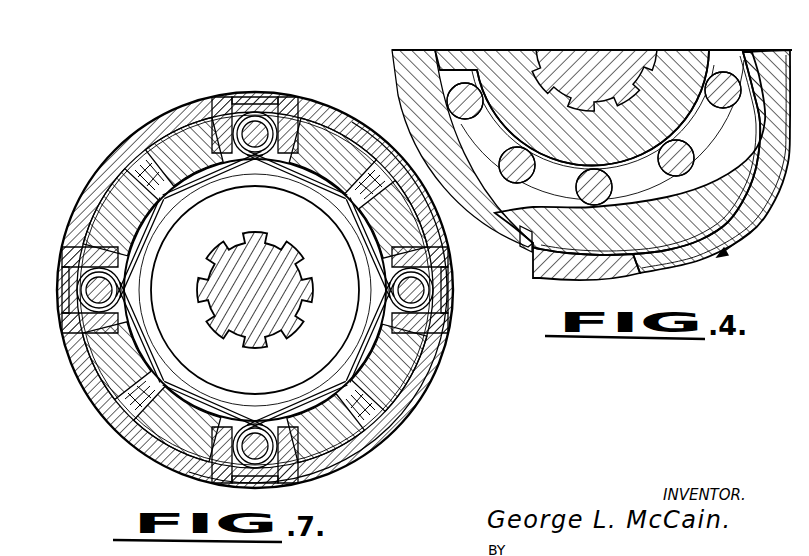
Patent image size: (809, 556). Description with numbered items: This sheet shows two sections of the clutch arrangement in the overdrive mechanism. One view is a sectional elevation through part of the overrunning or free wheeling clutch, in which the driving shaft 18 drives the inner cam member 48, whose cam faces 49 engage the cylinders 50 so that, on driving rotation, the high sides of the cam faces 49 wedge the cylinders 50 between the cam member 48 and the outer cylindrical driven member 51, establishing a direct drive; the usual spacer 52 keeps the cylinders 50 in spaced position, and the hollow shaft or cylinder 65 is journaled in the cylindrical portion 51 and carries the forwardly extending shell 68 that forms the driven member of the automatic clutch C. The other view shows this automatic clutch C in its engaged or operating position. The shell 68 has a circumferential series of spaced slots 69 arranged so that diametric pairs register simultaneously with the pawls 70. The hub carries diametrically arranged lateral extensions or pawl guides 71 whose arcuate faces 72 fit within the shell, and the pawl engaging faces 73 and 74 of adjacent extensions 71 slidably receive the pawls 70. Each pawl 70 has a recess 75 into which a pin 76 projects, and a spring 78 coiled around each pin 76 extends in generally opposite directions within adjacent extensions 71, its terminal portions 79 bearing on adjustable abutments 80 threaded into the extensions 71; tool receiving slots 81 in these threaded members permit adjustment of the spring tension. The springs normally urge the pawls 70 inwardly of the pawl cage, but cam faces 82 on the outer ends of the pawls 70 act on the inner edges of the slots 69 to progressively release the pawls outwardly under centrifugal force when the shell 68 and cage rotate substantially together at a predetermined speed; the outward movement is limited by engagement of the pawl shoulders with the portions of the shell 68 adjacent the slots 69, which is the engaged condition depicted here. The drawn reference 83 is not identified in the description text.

In FIG. 7, the automatic clutch C is at (167, 93).
In FIG. 7, the driving shaft 18 is at (240, 352).
In FIG. 4, the driving shaft 18 is at (611, 56).
In FIG. 4, the inner cam member 48 is at (707, 54).
In FIG. 4, the cam faces 49 is at (501, 66).
In FIG. 4, the cylinders 50 is at (473, 62).
In FIG. 4, the outer cylindrical driven member 51 is at (781, 53).
In FIG. 4, the spacer 52 is at (524, 238).
In FIG. 4, the hollow shaft or cylinder 65 is at (640, 273).
In FIG. 7, the shell 68 is at (326, 108).
In FIG. 7, the slots 69 is at (264, 98).
In FIG. 7, the pawls 70 is at (74, 304).
In FIG. 7, the pawl guides 71 is at (84, 210).
In FIG. 7, the arcuate faces 72 is at (98, 386).
In FIG. 7, the pawl engaging face 73 is at (92, 347).
In FIG. 7, the pawl engaging face 74 is at (80, 243).
In FIG. 7, the recess 75 is at (131, 272).
In FIG. 7, the pin 76 is at (110, 290).
In FIG. 7, the springs 78 is at (228, 182).
In FIG. 7, the terminal portions 79 is at (343, 210).
In FIG. 7, the adjustable abutments 80 is at (334, 176).
In FIG. 7, the tool receiving slots 81 is at (372, 148).
In FIG. 7, the cam faces 82 is at (63, 273).
In FIG. 7, the lining 83 is at (130, 424).